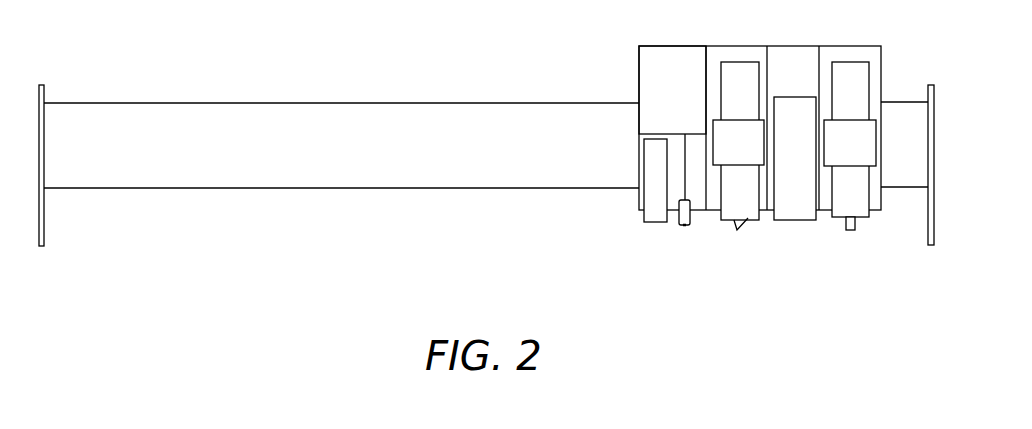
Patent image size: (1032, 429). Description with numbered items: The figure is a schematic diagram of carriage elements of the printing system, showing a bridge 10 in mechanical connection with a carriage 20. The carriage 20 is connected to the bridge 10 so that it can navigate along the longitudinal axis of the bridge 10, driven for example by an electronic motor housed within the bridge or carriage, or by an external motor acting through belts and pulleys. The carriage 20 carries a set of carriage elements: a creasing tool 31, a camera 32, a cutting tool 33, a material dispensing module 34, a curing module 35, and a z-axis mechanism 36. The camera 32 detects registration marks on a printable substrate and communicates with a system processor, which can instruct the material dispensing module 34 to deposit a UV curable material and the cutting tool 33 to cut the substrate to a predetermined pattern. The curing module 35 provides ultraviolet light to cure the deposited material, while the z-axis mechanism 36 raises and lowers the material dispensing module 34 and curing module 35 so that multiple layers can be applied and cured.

The bridge 10 is at (397, 101).
The carriage 20 is at (671, 45).
The creasing tool 31 is at (860, 228).
The camera 32 is at (803, 228).
The cutting tool 33 is at (748, 228).
The material dispensing module 34 is at (682, 228).
The curing module 35 is at (641, 216).
The z-axis mechanism 36 is at (636, 78).